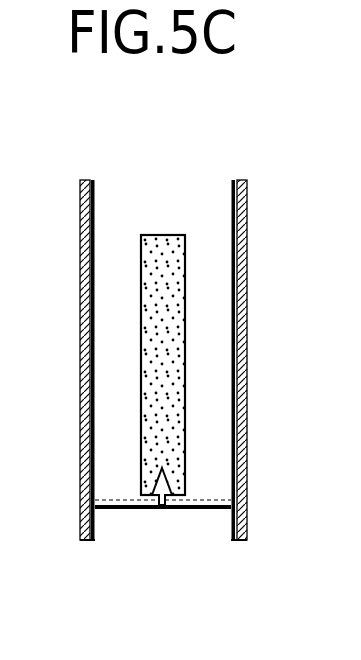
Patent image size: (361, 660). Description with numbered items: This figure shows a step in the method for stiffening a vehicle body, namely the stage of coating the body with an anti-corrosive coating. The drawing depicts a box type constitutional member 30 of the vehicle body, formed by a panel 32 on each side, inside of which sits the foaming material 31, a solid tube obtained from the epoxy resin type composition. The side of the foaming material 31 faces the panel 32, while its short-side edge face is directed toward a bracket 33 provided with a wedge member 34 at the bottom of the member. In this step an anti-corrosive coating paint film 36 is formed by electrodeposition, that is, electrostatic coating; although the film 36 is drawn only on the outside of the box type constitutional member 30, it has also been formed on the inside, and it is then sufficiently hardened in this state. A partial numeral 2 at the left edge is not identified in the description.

The box type constitutional member 30 is at (111, 181).
The foaming material 31 is at (155, 235).
The panel 32 is at (235, 200).
The bracket 33 is at (113, 510).
The wedge member 34 is at (163, 510).
The anti-corrosive coating paint film 36 is at (80, 358).
The truncated numeral 2 is at (7, 239).